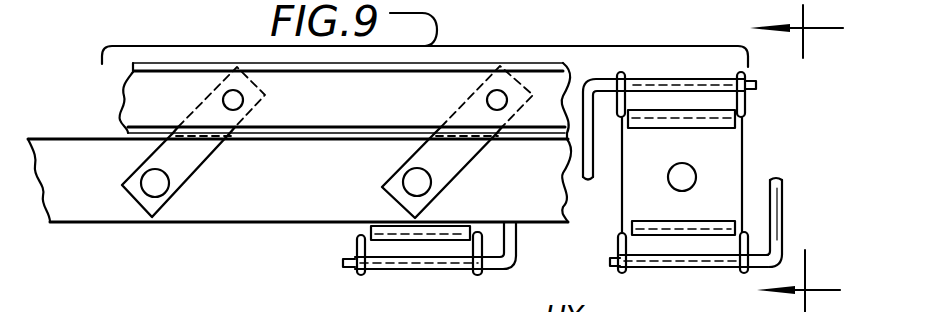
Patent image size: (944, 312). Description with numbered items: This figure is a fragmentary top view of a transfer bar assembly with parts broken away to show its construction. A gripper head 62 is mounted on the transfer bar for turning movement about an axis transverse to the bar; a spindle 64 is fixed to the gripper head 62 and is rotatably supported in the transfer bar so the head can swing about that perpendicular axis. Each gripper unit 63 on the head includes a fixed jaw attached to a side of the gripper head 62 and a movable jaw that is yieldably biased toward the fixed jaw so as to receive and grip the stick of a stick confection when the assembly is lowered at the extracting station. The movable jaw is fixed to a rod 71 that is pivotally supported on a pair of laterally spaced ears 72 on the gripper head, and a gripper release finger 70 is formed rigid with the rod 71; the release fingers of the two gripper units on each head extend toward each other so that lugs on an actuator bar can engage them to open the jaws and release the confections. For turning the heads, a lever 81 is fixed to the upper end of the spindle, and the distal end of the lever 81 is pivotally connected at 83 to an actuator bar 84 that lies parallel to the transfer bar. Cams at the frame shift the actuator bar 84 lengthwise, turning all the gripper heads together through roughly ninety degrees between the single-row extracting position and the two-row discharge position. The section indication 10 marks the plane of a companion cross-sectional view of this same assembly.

The section line 10- 10 is at (800, 156).
The gripper head 62 is at (645, 204).
The gripper unit 63 is at (750, 158).
The spindle 64 is at (683, 165).
The gripper release finger 70 is at (780, 210).
The rod 71 is at (670, 266).
The ear 72 is at (155, 180).
The lever 81 is at (197, 170).
The pivotal connection 83 is at (250, 97).
The actuator bar 84 is at (383, 103).